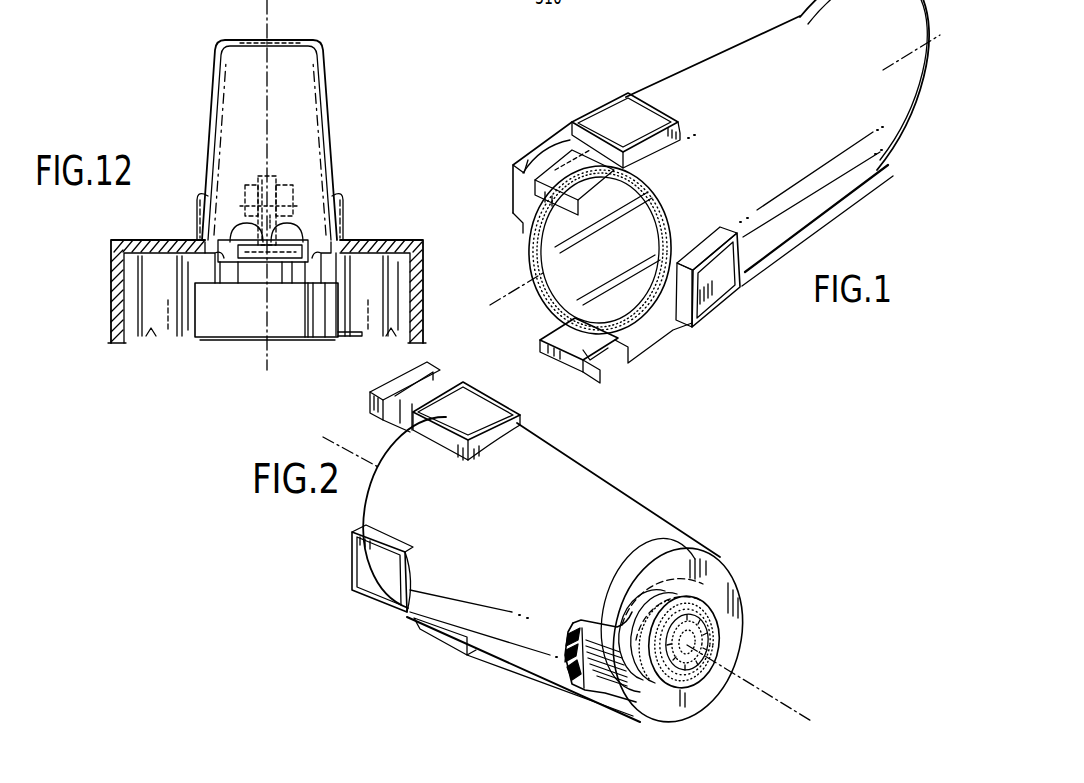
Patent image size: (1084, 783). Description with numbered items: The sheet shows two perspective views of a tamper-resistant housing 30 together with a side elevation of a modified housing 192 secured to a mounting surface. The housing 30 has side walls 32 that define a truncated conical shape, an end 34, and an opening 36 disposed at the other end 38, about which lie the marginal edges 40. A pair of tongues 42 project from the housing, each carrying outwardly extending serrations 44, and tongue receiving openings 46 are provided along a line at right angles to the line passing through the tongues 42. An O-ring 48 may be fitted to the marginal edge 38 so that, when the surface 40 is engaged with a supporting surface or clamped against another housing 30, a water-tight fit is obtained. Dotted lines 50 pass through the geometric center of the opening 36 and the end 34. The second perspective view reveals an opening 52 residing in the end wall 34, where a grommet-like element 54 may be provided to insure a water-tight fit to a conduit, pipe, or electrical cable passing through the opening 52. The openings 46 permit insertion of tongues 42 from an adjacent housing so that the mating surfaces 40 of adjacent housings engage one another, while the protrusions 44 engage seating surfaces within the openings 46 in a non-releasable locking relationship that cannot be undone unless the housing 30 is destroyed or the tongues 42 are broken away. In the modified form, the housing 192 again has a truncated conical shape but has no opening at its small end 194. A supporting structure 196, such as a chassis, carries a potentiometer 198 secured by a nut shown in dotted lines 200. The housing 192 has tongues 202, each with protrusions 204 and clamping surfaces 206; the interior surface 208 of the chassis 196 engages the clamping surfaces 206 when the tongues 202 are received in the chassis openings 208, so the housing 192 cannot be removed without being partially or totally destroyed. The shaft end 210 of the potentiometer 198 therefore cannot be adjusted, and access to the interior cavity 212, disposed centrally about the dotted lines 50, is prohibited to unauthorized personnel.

In FIG. 1, the housing 30 is at (675, 73).
In FIG. 2, the housing 30 is at (645, 495).
In FIG. 1, the side walls 32 is at (730, 72).
In FIG. 2, the side walls 32 is at (677, 525).
In FIG. 1, the end 34 is at (863, 50).
In FIG. 2, the end 34 is at (722, 577).
In FIG. 1, the opening 36 is at (590, 257).
In FIG. 1, the end 38 is at (654, 332).
In FIG. 1, the marginal edges 40 is at (671, 240).
In FIG. 2, the marginal edges 40 is at (372, 494).
In FIG. 1, the tongues 42 is at (565, 215).
In FIG. 2, the tongues 42 is at (372, 398).
In FIG. 1, the serrations 44 is at (570, 170).
In FIG. 2, the serrations 44 is at (433, 364).
In FIG. 1, the tongue receiving openings 46 is at (517, 198).
In FIG. 2, the tongue receiving openings 46 is at (350, 547).
In FIG. 1, the O-ring 48 is at (643, 245).
In FIG. 12, the dotted lines 50 is at (266, 10).
In FIG. 1, the dotted lines 50 is at (902, 68).
In FIG. 2, the dotted lines 50 is at (777, 701).
In FIG. 2, the opening 52 is at (672, 639).
In FIG. 2, the grommet-like element 54 is at (717, 637).
In FIG. 12, the housing 192 is at (328, 113).
In FIG. 12, the small end 194 is at (283, 40).
In FIG. 12, the supporting structure 196 is at (150, 239).
In FIG. 12, the potentiometer 198 is at (246, 322).
In FIG. 12, the nut 200 is at (255, 186).
In FIG. 12, the tongues 202 is at (214, 282).
In FIG. 12, the protrusions 204 is at (204, 263).
In FIG. 12, the clamping surfaces 206 is at (226, 273).
In FIG. 12, the interior surface 208 is at (250, 188).
In FIG. 12, the shaft end 210 is at (279, 183).
In FIG. 12, the interior cavity 212 is at (292, 120).